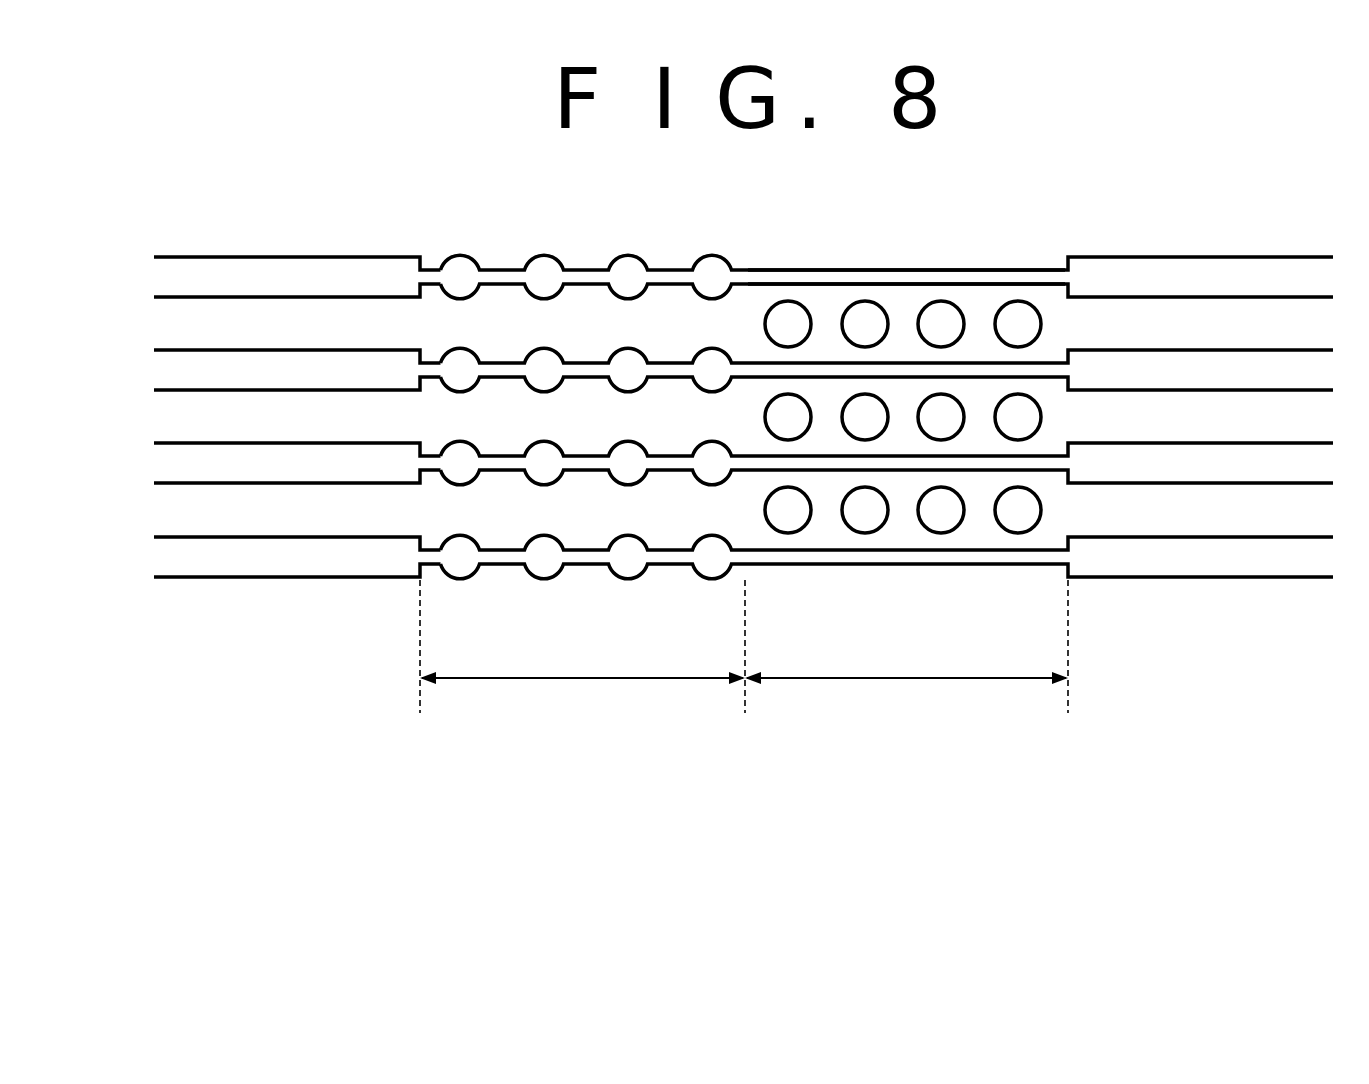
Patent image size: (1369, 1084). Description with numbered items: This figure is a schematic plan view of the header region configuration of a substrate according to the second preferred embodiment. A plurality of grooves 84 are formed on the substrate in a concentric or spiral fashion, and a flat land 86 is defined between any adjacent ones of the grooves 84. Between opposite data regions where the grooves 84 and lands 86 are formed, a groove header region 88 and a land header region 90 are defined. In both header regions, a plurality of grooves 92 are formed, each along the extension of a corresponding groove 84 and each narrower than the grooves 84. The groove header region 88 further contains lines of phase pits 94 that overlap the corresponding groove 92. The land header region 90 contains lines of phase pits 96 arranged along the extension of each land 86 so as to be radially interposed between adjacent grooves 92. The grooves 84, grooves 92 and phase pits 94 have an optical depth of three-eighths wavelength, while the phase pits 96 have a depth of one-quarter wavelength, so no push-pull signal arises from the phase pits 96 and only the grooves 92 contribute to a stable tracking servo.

The groove 84 is at (222, 366).
The land 86 is at (258, 520).
The groove header region 88 is at (573, 680).
The land header region 90 is at (903, 680).
The groove 92 is at (836, 270).
The phase pit 94 is at (461, 264).
The phase pit 96 is at (765, 324).